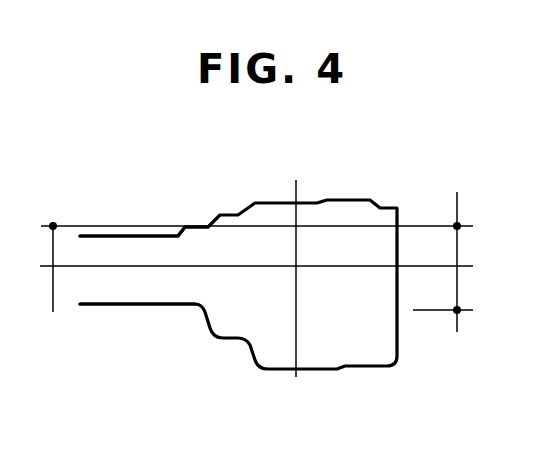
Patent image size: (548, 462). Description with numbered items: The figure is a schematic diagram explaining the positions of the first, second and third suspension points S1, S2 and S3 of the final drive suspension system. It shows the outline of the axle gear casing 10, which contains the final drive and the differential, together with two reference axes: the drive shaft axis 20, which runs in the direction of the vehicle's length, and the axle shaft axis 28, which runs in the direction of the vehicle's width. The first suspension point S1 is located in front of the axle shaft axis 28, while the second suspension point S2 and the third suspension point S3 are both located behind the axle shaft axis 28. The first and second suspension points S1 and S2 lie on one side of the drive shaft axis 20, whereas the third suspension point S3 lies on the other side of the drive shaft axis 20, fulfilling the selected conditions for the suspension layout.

The axle gear casing 10 is at (403, 347).
The drive shaft axis 20 is at (125, 267).
The axle shaft axis 28 is at (295, 183).
The first suspension point S1 is at (53, 222).
The second suspension point S2 is at (460, 222).
The third suspension point S3 is at (459, 308).